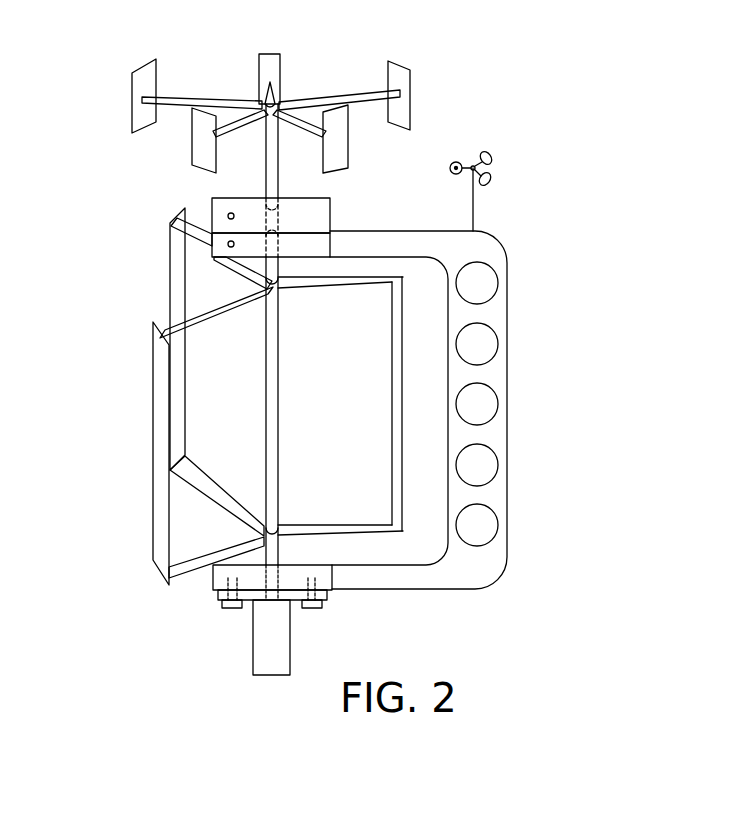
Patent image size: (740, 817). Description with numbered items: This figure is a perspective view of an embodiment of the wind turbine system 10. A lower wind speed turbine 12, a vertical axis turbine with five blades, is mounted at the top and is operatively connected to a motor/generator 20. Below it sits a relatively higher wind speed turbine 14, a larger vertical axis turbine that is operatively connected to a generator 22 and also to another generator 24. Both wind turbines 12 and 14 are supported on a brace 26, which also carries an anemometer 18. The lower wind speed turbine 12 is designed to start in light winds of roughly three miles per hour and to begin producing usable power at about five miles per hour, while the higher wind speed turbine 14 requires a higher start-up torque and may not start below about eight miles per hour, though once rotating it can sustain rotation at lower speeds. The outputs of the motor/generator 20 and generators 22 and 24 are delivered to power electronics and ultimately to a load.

The wind turbine assembly 10 is at (493, 105).
The lower wind speed turbine 12 is at (324, 94).
The higher wind speed turbine 14 is at (152, 352).
The anemometer 18 is at (478, 201).
The motor/generator 20 is at (243, 197).
The generator 22 is at (221, 252).
The generator 24 is at (222, 573).
The brace 26 is at (500, 401).